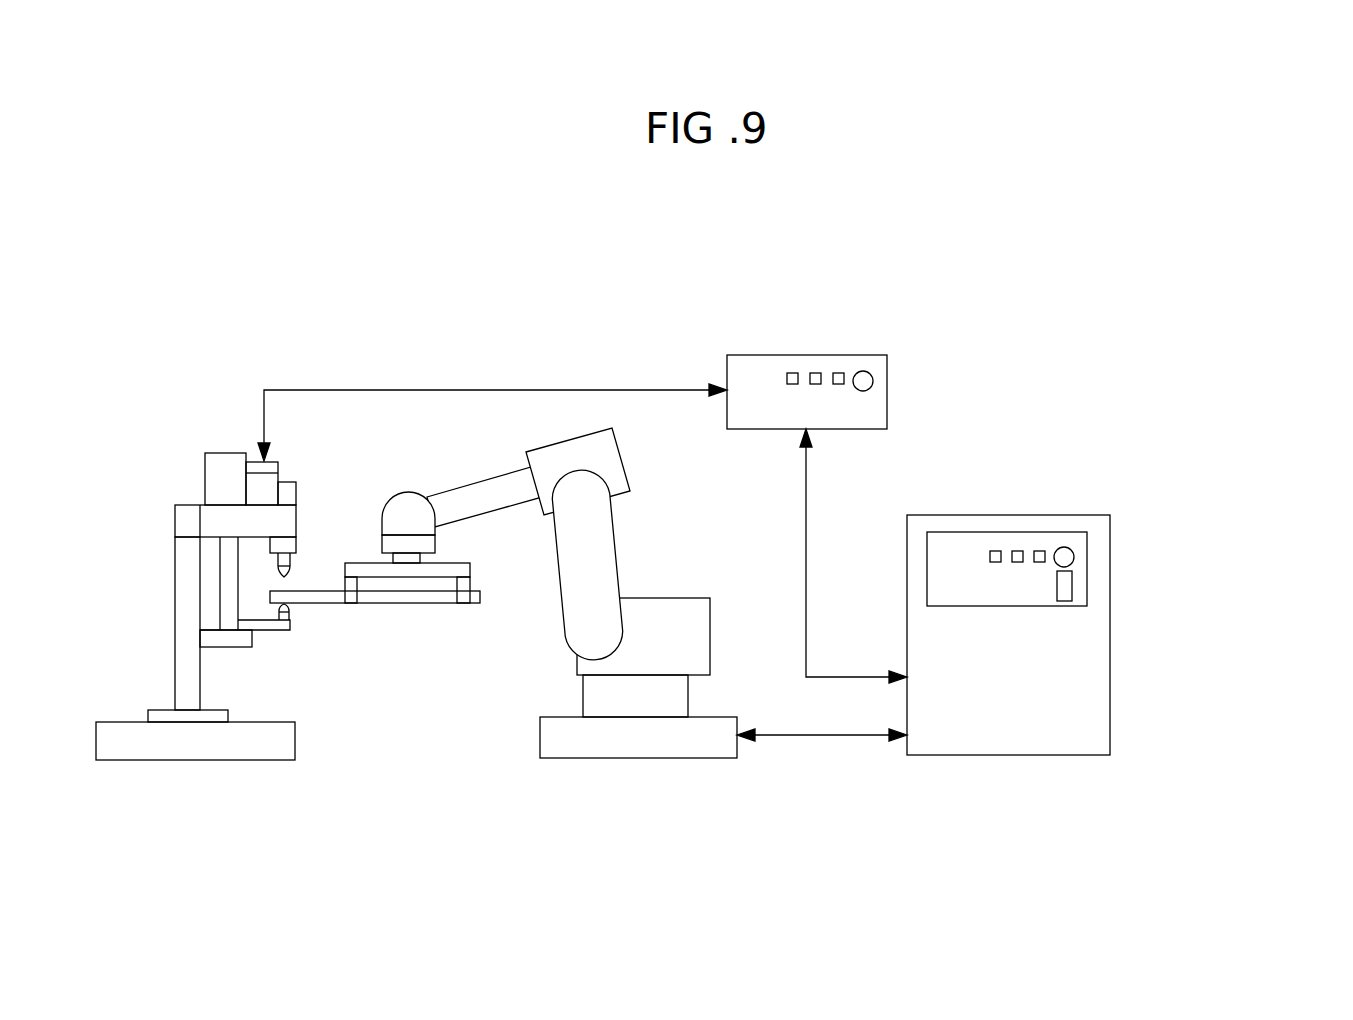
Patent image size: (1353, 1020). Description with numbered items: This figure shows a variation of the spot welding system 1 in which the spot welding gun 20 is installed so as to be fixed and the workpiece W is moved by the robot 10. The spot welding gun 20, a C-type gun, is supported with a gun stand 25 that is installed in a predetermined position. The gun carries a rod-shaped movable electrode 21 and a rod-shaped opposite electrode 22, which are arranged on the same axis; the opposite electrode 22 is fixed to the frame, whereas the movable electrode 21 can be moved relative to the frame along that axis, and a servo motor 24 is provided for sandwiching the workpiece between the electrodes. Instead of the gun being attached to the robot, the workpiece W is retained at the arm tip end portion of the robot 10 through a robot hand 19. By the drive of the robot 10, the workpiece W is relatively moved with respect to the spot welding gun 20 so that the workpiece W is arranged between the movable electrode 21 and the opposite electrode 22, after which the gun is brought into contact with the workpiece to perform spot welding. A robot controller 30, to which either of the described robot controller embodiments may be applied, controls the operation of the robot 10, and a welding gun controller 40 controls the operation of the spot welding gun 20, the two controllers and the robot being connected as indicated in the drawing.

The spot welding system 1 is at (969, 247).
The robot 10 is at (650, 542).
The robot hand 19 is at (455, 562).
The spot welding gun 20 is at (338, 489).
The movable electrode 21 is at (298, 558).
The opposite electrode 22 is at (292, 617).
The servo motor 24 is at (252, 461).
The gun stand 25 is at (175, 660).
The robot controller 30 is at (1112, 597).
The welding gun controller 40 is at (748, 355).
The workpiece W is at (402, 603).